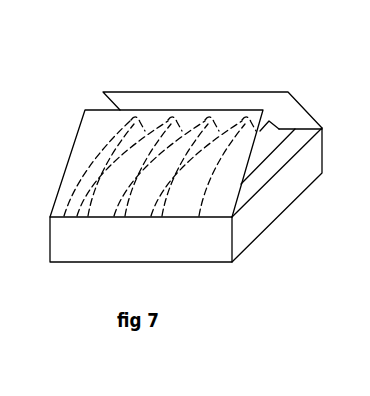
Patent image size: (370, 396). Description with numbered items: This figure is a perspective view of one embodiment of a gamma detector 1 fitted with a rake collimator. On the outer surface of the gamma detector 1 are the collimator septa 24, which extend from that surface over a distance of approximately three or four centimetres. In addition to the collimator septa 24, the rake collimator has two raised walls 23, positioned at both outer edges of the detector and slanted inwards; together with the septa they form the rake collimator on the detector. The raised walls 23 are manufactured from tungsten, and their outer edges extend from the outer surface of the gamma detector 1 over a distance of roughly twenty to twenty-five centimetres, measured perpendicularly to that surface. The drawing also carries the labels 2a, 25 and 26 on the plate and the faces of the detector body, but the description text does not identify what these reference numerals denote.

The gamma detector 1 is at (186, 210).
The plate 2a is at (73, 151).
The raised walls 23 is at (183, 121).
The collimator septa 24 is at (72, 190).
The front face of body 25 is at (141, 258).
The side face of body 26 is at (277, 191).